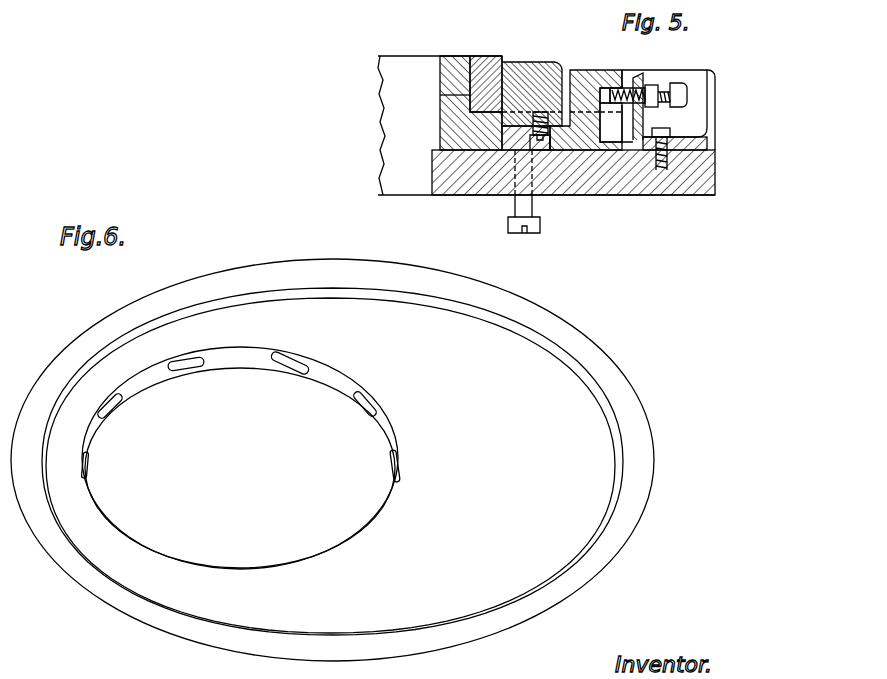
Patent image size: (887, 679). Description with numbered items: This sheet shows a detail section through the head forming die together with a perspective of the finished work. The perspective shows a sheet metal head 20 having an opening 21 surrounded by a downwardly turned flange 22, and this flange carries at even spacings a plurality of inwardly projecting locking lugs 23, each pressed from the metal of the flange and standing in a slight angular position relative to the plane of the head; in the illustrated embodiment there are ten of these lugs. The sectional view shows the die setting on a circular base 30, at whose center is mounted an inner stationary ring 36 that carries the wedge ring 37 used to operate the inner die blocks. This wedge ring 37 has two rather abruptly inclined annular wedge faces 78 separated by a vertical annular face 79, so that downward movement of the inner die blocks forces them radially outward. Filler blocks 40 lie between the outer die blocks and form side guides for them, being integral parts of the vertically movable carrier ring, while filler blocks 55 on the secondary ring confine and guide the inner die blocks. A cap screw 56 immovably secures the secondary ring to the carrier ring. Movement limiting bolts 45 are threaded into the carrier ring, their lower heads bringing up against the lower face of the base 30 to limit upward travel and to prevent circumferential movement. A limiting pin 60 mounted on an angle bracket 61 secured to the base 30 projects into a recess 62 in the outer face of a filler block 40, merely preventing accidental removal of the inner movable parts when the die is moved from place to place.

In FIG. 6, the head 20 is at (332, 460).
In FIG. 6, the opening 21 is at (240, 468).
In FIG. 6, the downwardly turned flange 22 is at (243, 362).
In FIG. 6, the locking lugs 23 is at (186, 363).
In FIG. 5, the circular base 30 is at (716, 166).
In FIG. 5, the inner stationary ring 36 is at (447, 76).
In FIG. 5, the wedge ring 37 is at (480, 57).
In FIG. 5, the filler blocks 40 is at (585, 73).
In FIG. 5, the movement limiting bolts 45 is at (513, 206).
In FIG. 5, the filler blocks 55 is at (519, 66).
In FIG. 5, the cap screw 56 is at (541, 138).
In FIG. 5, the limiting pins 60 is at (622, 92).
In FIG. 5, the angle brackets 61 is at (686, 139).
In FIG. 5, the recesses 62 is at (613, 115).
In FIG. 5, the annular wedge faces 78 is at (502, 86).
In FIG. 5, the vertical annular face 79 is at (448, 94).